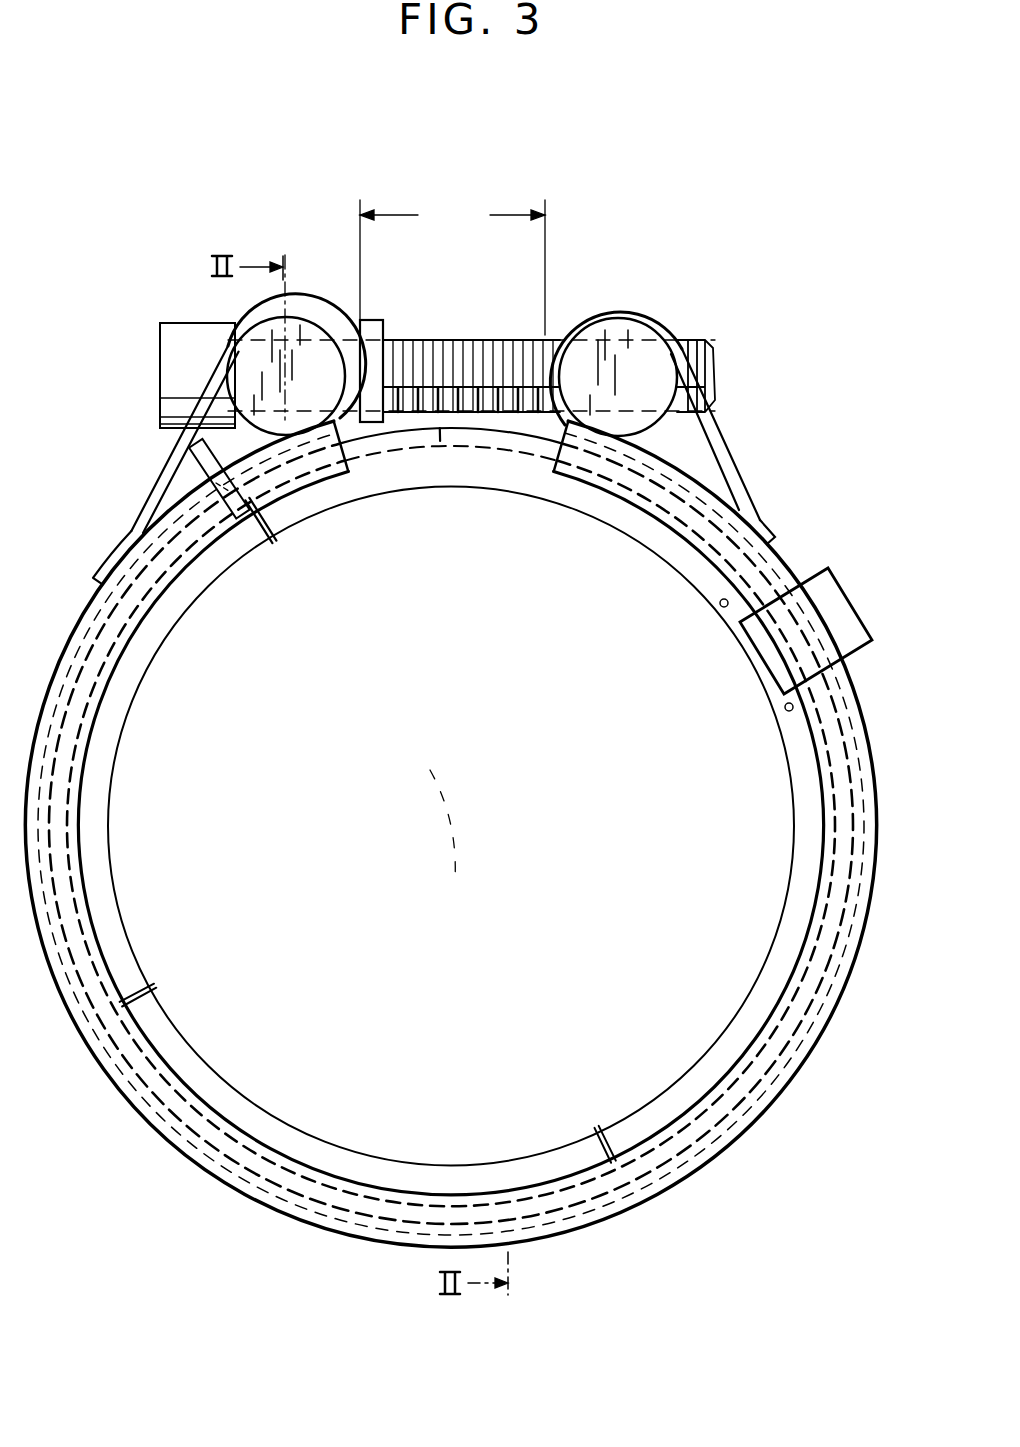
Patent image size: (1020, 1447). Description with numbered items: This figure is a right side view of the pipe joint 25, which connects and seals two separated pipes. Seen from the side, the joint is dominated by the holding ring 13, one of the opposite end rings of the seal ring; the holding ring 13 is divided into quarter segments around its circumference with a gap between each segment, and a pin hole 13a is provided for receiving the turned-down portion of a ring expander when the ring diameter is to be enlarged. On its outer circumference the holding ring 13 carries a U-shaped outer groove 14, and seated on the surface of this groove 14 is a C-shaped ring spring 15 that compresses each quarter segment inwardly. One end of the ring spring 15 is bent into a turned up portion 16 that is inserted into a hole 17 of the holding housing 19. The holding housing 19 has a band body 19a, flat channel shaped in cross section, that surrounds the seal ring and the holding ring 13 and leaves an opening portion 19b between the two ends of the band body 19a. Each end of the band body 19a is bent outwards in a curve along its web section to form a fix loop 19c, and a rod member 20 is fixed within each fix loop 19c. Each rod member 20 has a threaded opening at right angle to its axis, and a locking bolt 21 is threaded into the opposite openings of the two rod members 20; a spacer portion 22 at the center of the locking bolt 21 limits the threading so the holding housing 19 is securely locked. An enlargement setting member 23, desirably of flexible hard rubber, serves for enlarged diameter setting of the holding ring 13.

The holding ring 13 is at (162, 626).
The pin hole 13a is at (785, 708).
The outer groove 14 is at (68, 872).
The ring spring 15 is at (72, 934).
The turned up portion 16 is at (197, 462).
The hole 17 is at (224, 487).
The holding housing 19 is at (178, 1149).
The band body 19a is at (276, 1197).
The opening portion 19b is at (452, 266).
The fix loop 19c is at (612, 306).
The rod member 20 is at (308, 328).
The locking bolt 21 is at (170, 354).
The spacer portion 22 is at (386, 335).
The enlargement setting member 23 is at (826, 574).
The pipe joint 25 is at (722, 332).